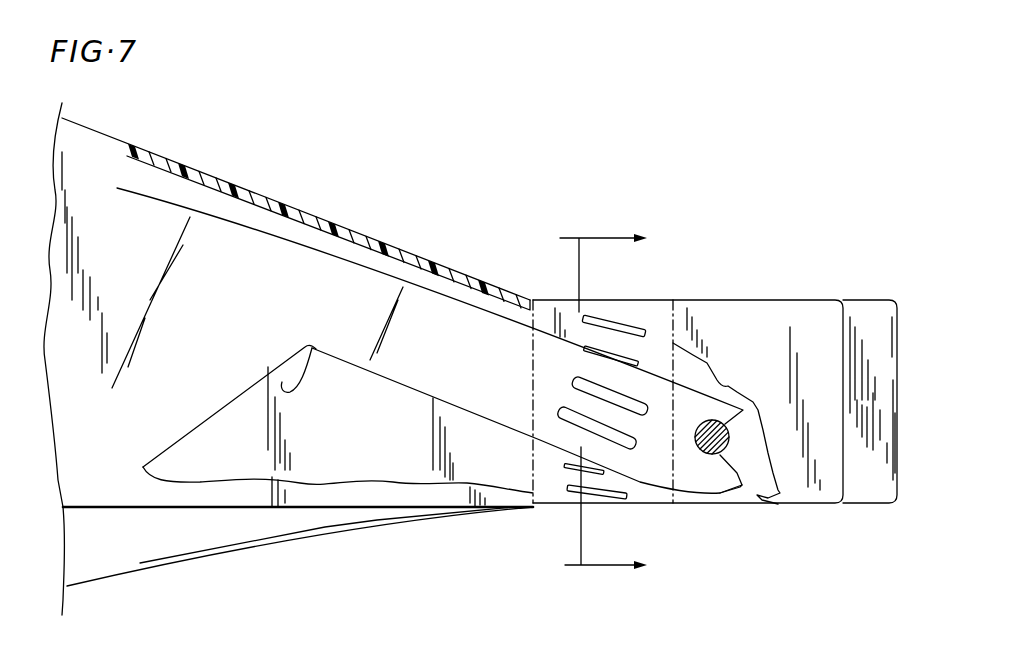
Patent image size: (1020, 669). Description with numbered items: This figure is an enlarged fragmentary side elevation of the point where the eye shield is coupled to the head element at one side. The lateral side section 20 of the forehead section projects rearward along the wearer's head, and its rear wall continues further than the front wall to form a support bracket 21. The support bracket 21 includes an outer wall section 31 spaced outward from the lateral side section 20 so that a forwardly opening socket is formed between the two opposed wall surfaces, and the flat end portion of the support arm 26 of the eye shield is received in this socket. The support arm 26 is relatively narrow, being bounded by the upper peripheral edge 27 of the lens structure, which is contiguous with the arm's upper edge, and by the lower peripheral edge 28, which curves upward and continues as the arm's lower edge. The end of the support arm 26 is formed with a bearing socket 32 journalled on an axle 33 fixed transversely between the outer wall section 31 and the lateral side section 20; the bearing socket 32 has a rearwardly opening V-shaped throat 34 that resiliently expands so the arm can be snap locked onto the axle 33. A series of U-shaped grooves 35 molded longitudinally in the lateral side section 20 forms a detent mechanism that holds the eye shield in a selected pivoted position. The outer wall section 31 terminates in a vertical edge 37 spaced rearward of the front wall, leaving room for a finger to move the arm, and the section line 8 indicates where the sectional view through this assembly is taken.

The section line 8- 8 is at (613, 402).
The lateral side section 20 is at (435, 267).
The support bracket 21 is at (808, 298).
The support arm 26 is at (407, 363).
The upper peripheral edge 27 is at (270, 223).
The lower peripheral edge 28 is at (277, 383).
The outer wall section 31 is at (770, 313).
The bearing socket 32 is at (717, 387).
The axle 33 is at (715, 457).
The V-shaped throat 34 is at (760, 503).
The U-shaped grooves 35 is at (612, 318).
The vertical edge 37 is at (673, 300).